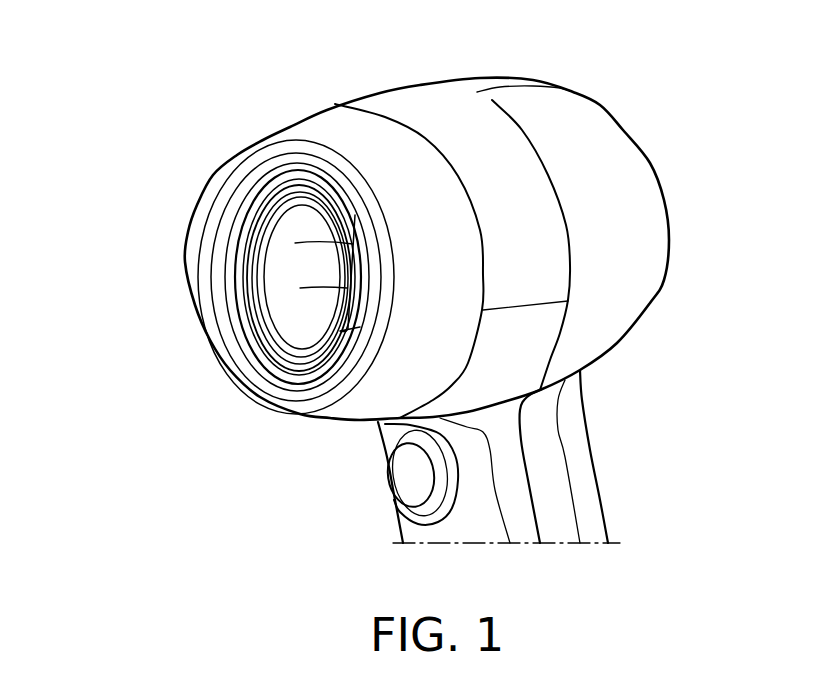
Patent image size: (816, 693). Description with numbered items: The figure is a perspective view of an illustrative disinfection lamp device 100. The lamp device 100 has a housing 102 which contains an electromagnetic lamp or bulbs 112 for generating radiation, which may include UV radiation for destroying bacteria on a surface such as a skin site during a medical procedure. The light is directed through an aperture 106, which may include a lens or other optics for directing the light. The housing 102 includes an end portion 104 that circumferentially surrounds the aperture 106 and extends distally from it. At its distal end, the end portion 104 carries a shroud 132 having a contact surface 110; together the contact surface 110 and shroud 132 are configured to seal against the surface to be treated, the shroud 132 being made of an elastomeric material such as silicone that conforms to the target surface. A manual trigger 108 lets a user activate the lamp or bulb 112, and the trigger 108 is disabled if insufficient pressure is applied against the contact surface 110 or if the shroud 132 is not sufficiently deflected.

The disinfection lamp device 100 is at (396, 273).
The housing 102 is at (650, 227).
The end portion 104 is at (282, 119).
The aperture 106 is at (303, 270).
The manual trigger 108 is at (393, 479).
The contact surface 110 is at (208, 205).
The electromagnetic lamp or bulbs 112 is at (355, 310).
The shroud 132 is at (323, 128).